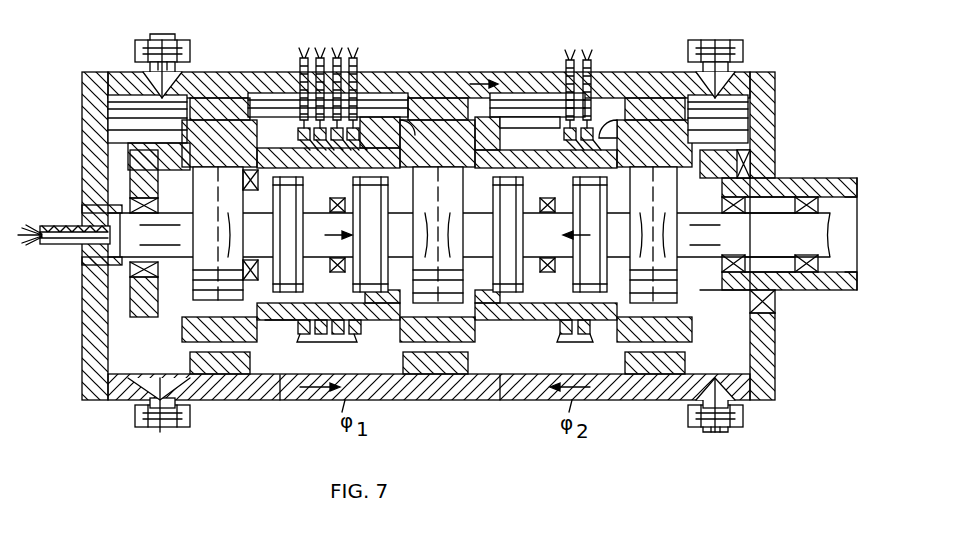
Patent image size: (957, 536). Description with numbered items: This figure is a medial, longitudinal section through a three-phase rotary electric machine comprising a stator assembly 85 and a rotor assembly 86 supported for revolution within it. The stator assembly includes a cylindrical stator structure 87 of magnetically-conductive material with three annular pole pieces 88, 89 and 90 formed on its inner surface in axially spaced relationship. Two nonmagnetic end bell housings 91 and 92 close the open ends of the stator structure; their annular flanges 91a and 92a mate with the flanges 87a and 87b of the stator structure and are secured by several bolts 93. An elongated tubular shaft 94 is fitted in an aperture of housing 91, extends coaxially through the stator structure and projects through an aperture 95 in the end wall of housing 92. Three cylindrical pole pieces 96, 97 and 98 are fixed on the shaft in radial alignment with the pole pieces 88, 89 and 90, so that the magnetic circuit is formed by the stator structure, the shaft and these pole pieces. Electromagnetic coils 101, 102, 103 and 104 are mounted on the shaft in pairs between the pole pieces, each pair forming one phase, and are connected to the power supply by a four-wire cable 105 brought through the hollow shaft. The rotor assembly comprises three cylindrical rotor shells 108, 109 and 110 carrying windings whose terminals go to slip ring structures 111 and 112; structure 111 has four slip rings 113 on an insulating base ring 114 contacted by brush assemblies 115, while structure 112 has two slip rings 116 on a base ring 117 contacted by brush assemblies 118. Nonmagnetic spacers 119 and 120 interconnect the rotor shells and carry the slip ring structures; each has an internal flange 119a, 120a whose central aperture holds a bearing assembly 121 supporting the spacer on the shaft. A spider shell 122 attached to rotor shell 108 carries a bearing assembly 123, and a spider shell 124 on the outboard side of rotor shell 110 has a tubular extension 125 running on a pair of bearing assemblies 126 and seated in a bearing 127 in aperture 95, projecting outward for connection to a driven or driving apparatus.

The stator assembly 85 is at (444, 410).
The rotor assembly 86 is at (517, 400).
The stator structure 87 is at (283, 400).
The flange 87a is at (175, 40).
The flange 87b is at (705, 432).
The pole piece 88 is at (262, 95).
The pole piece 89 is at (483, 80).
The pole piece 90 is at (640, 88).
The end bell housing 91 is at (82, 124).
The annular flange 91a is at (160, 38).
The end bell housing 92 is at (775, 95).
The annular flange 92a is at (725, 435).
The bolts 93 is at (135, 50).
The tubular shaft 94 is at (82, 246).
The aperture 95 is at (778, 335).
The pole piece 96 is at (190, 212).
The pole piece 97 is at (436, 235).
The pole piece 98 is at (672, 228).
The electromagnetic coil 101 is at (291, 234).
The electromagnetic coil 102 is at (375, 200).
The electromagnetic coil 103 is at (540, 200).
The electromagnetic coil 104 is at (598, 214).
The four-wire cable 105 is at (64, 232).
The rotor shell 108 is at (185, 335).
The rotor shell 109 is at (465, 330).
The rotor shell 110 is at (650, 392).
The slip ring structure 111 is at (362, 115).
The slip ring structure 112 is at (573, 117).
The slip rings 113 is at (330, 342).
The base ring 114 is at (274, 343).
The brush assemblies 115 is at (353, 56).
The slip rings 116 is at (568, 336).
The base ring 117 is at (545, 338).
The brush assemblies 118 is at (587, 58).
The spacer 119 is at (395, 128).
The flange 119a is at (375, 325).
The spacer 120 is at (498, 145).
The flange 120a is at (525, 168).
The bearing assembly 121 is at (461, 234).
The spider shell 122 is at (135, 173).
The bearing assembly 123 is at (135, 267).
The spider shell 124 is at (735, 162).
The tubular extension 125 is at (858, 185).
The bearing assemblies 126 is at (790, 203).
The bearing 127 is at (778, 300).